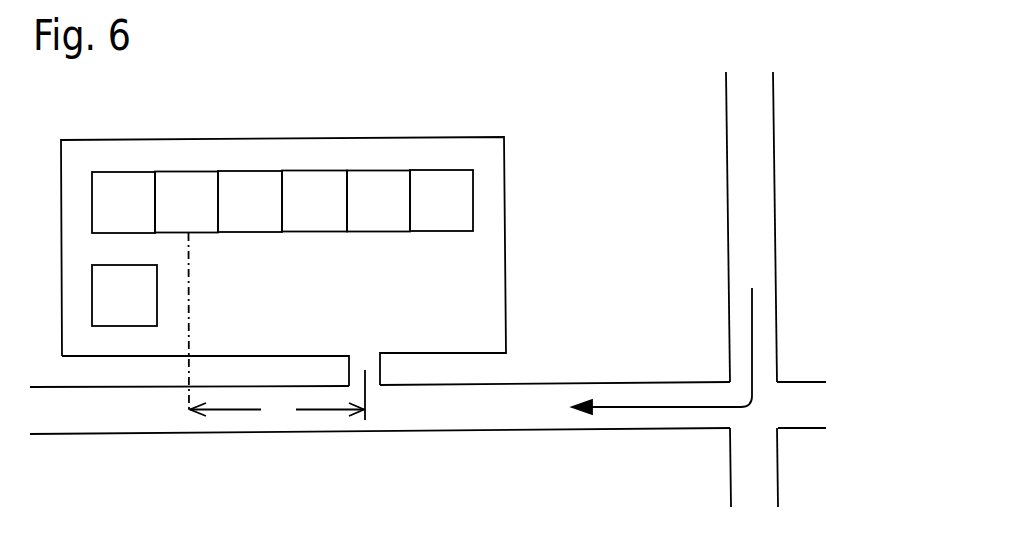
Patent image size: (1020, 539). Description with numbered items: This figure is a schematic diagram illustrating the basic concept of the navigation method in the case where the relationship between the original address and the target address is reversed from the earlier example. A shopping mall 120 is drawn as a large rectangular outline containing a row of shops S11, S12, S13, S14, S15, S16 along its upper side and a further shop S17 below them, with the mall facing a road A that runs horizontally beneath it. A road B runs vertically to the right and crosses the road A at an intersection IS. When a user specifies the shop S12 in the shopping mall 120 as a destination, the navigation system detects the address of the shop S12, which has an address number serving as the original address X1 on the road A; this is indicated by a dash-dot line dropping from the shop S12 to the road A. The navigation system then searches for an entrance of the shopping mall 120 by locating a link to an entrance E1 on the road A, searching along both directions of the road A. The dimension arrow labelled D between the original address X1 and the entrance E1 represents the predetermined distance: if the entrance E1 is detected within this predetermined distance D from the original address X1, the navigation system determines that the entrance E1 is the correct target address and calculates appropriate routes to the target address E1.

The shopping mall 120 is at (262, 147).
The shop S11 is at (123, 202).
The shop S12 is at (186, 202).
The shop S13 is at (250, 201).
The shop S14 is at (314, 201).
The shop S15 is at (378, 201).
The shop S16 is at (441, 200).
The shop S17 is at (124, 295).
The original address X1 is at (174, 327).
The predetermined distance D is at (277, 409).
The entrance E1 is at (384, 395).
The road A is at (547, 393).
The road B is at (767, 212).
The intersection IS is at (747, 412).